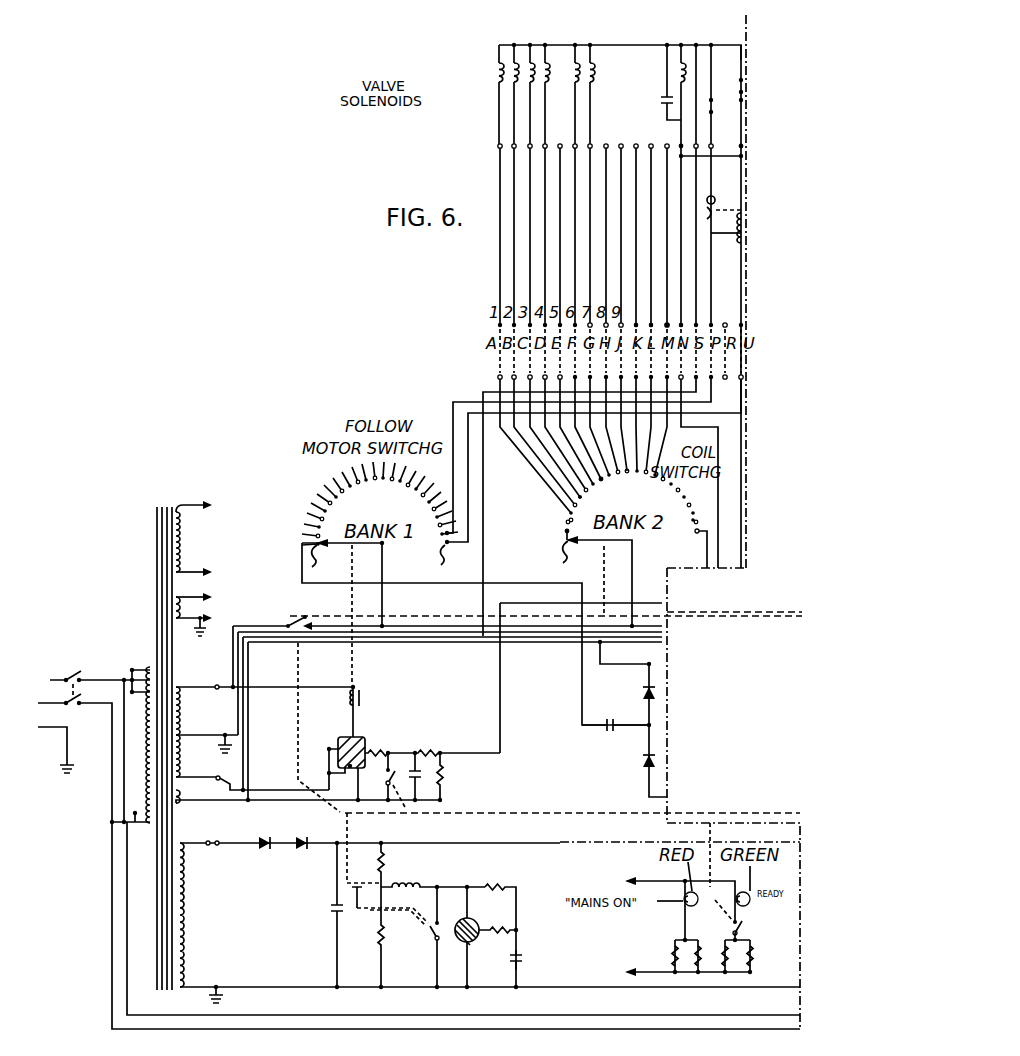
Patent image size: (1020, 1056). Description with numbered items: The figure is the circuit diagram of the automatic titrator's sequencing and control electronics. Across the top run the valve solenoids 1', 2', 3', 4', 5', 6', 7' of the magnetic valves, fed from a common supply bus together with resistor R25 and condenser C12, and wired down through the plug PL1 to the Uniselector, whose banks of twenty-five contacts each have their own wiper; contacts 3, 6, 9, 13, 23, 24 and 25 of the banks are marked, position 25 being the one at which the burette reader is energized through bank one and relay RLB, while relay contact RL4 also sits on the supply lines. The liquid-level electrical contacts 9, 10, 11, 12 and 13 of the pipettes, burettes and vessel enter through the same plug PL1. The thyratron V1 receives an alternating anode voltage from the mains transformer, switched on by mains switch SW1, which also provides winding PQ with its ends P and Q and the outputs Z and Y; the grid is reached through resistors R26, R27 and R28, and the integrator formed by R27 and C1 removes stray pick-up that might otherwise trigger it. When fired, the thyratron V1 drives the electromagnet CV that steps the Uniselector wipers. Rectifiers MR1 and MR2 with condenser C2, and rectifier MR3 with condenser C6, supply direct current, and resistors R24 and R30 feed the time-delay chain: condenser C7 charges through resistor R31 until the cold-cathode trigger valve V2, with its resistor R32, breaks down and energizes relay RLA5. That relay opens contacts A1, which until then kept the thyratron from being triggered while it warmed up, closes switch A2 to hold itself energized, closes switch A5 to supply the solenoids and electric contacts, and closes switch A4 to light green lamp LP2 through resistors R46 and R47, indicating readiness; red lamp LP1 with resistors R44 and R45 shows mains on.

The solenoid of magnetic valve 1 1' is at (486, 93).
The solenoid of magnetic valve 2 2' is at (512, 81).
The solenoid of magnetic valve 3 3' is at (530, 82).
The solenoid of magnetic valve 4 4' is at (552, 83).
The solenoid of magnetic valve 5 5' is at (572, 85).
The solenoid of magnetic valve 6 6' is at (597, 83).
The solenoid of magnetic valve 7 7' is at (714, 40).
The resistor R25 is at (652, 95).
The condenser C12 is at (652, 82).
The relay contact RL4 is at (703, 210).
The relay RLB/3 RLB is at (703, 231).
The bank 2 contact No. 3 / position 3 is at (638, 389).
The bank 2 contact No. 6 is at (595, 501).
The electric contacts 9 is at (598, 482).
The electrical contacts 10 is at (637, 324).
The electrical contacts 11 is at (651, 324).
The electrical contacts 12 is at (667, 324).
The electrical contacts 13 is at (681, 324).
The plug PL1 is at (548, 361).
The contact No. 23 is at (430, 543).
The contact No. 24 is at (635, 547).
The position 25 is at (569, 551).
The switch A5 is at (313, 703).
The P end of winding PQ P is at (200, 506).
The Q end of winding PQ Q is at (201, 575).
The transformer output Z is at (406, 787).
The transformer output Y is at (455, 774).
The mains switch SW1 is at (419, 769).
The electromagnet CV is at (364, 696).
The thyratron V1 is at (342, 744).
The resistor R26 is at (382, 743).
The resistor R27 is at (444, 743).
The relay contacts A1 is at (383, 781).
The condenser C1 is at (406, 776).
The resistor R28 is at (459, 776).
The metal rectifier MR1 is at (627, 690).
The metal rectifier MR2 is at (622, 763).
The condenser C2 is at (615, 715).
The metal rectifier MR3 is at (283, 833).
The condenser C6 is at (323, 915).
The resistor R24 is at (399, 865).
The resistor R30 is at (361, 937).
The relay RLA/5 RLA5 is at (418, 884).
The resistor R31 is at (498, 925).
The switch A2 is at (404, 937).
The trigger valve V2 is at (460, 937).
The resistor R32 is at (496, 944).
The condenser C7 is at (529, 959).
The red lamp LP1 is at (701, 913).
The green lamp LP2 is at (754, 913).
The switch A4 is at (721, 924).
The resistor R44 is at (652, 959).
The resistor R45 is at (698, 952).
The resistor R46 is at (728, 952).
The resistor R47 is at (767, 959).